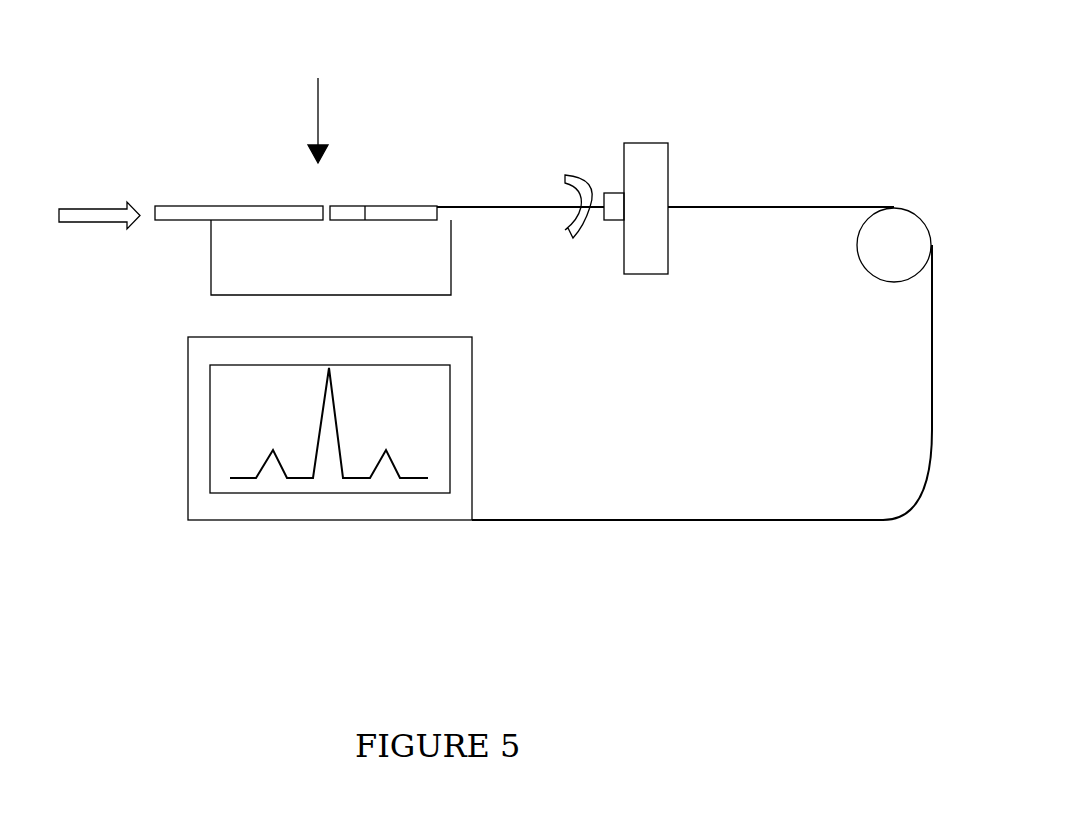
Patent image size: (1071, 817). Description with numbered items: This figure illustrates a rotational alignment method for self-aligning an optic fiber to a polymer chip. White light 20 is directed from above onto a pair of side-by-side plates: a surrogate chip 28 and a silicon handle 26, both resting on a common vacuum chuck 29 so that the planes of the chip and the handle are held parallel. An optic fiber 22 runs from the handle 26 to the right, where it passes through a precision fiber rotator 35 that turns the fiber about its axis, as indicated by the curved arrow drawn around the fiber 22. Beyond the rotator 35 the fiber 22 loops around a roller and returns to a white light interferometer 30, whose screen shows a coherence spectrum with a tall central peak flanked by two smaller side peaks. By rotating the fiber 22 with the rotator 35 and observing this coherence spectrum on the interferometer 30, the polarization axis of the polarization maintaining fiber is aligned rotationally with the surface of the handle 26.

The incident light 20 is at (323, 94).
The optical fiber 22 is at (495, 208).
The sensor plate 26 is at (400, 210).
The sample plate 28 is at (230, 205).
The support base 29 is at (331, 257).
The spectrum display 30 is at (448, 507).
The fiber connector 35 is at (645, 188).